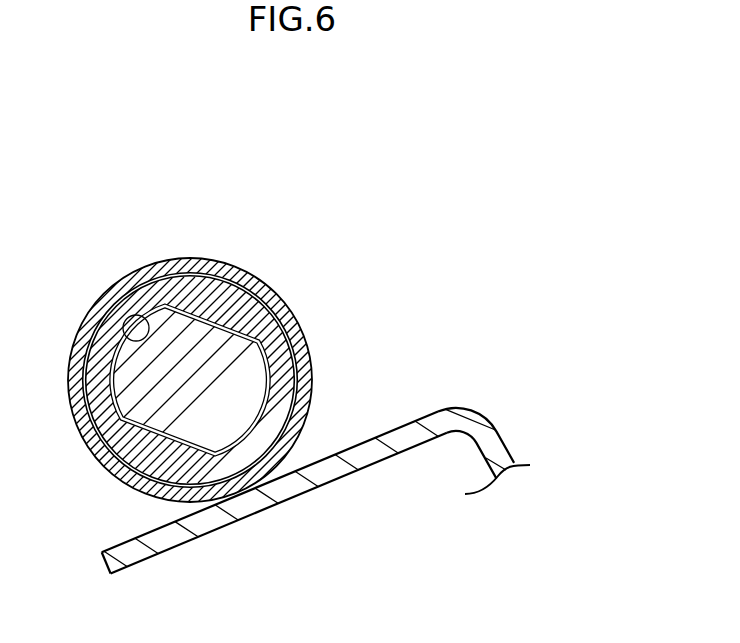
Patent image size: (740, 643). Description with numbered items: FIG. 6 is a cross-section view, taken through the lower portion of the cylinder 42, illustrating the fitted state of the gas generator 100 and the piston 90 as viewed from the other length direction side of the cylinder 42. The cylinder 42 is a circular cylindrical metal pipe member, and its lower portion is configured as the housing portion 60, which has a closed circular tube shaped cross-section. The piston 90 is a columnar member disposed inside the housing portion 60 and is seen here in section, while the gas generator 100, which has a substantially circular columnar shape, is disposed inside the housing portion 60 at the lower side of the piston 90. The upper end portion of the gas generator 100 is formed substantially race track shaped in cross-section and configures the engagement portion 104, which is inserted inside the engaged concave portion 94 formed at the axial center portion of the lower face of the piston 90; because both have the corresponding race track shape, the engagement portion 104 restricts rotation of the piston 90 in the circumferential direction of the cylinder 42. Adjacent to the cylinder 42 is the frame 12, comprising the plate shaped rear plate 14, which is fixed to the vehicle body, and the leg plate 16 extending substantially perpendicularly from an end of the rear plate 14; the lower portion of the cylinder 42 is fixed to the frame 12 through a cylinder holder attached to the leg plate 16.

The cylinder 42 is at (245, 261).
The engagement portion 104 is at (305, 390).
The housing portion 60 is at (268, 324).
The piston 90 is at (103, 460).
The gas generator 100 is at (274, 352).
The engaged concave portion 94 is at (134, 316).
The leg plate 16 is at (424, 416).
The frame 12 is at (509, 431).
The rear plate 14 is at (511, 455).